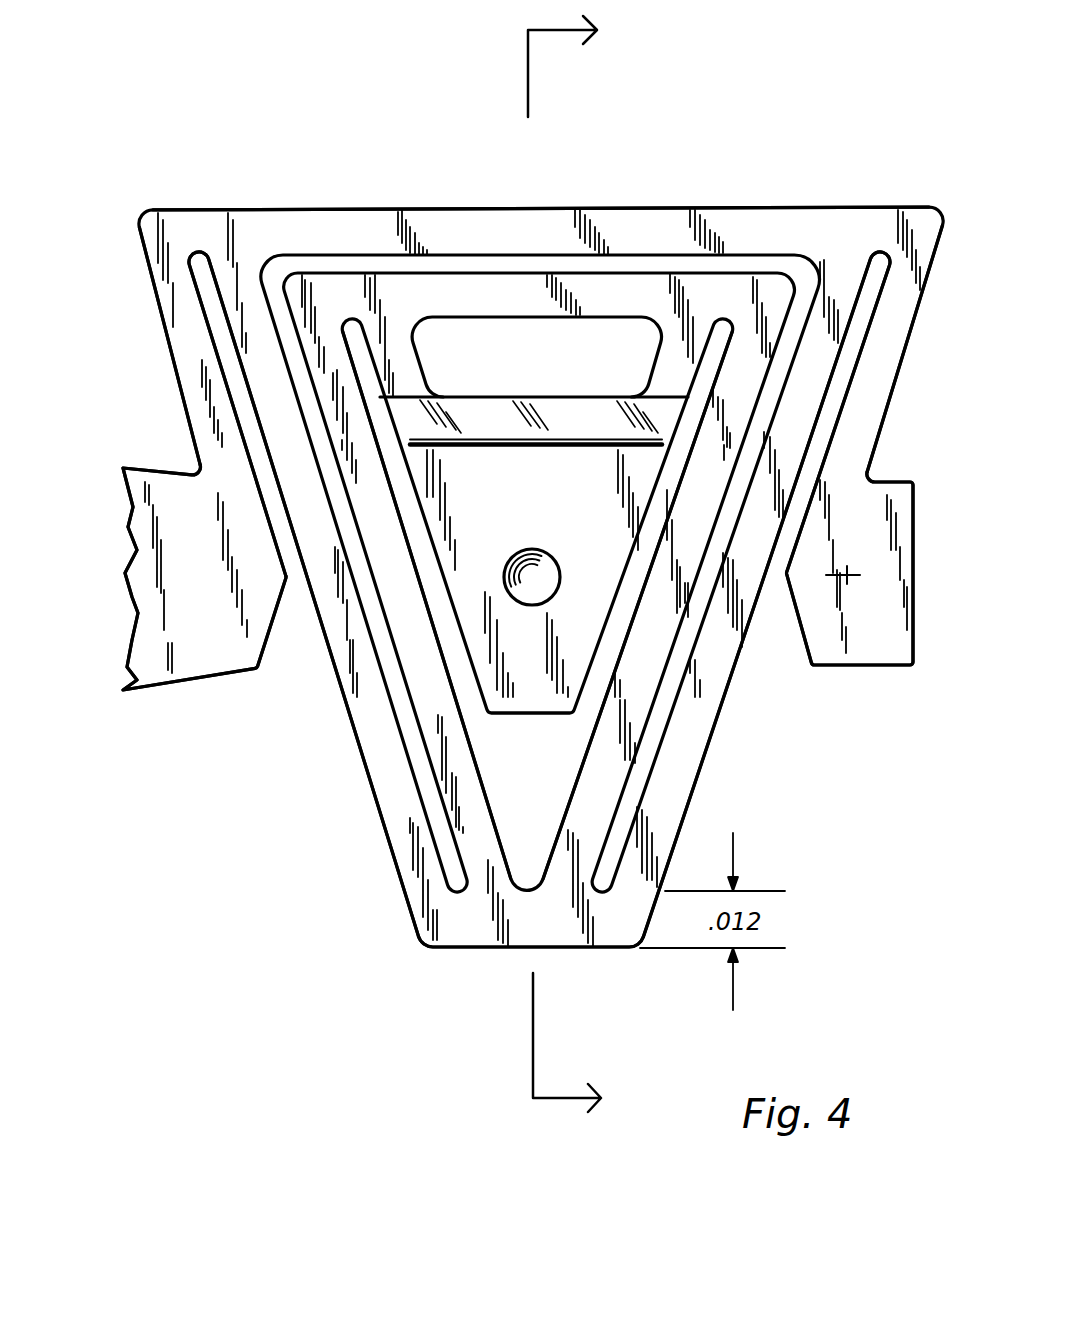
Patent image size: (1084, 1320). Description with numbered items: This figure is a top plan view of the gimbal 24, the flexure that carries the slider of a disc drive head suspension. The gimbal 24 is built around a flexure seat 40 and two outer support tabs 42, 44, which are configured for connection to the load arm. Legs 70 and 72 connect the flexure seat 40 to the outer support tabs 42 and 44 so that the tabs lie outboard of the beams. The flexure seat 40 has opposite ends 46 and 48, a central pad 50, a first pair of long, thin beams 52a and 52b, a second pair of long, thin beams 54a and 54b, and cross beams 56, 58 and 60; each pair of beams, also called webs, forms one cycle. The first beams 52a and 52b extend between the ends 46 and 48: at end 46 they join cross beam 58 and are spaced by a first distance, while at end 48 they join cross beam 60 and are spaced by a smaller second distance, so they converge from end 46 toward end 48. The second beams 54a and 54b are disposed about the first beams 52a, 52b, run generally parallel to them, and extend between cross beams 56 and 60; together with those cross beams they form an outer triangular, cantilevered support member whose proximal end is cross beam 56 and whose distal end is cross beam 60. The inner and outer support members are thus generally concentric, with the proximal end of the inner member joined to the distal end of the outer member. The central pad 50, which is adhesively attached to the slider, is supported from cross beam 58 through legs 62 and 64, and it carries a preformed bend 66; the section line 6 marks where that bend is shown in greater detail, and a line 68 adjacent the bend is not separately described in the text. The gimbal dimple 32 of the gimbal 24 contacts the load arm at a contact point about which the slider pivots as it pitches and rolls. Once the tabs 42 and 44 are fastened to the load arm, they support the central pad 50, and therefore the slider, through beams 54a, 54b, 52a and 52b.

The gimbal 24 is at (537, 577).
The flexure seat 40 is at (410, 193).
The end 46 is at (537, 504).
The cross beam 56 is at (501, 220).
The leg 70 is at (193, 355).
The leg 72 is at (885, 342).
The outer support tab 42 is at (164, 488).
The outer support tab 44 is at (871, 505).
The long, thin beam 54a is at (393, 793).
The long, thin beam 54b is at (680, 757).
The long, thin beam 52a is at (467, 770).
The long, thin beam 52b is at (598, 795).
The central pad 50 is at (505, 490).
The cross beam 58 is at (613, 303).
The leg 62 is at (400, 358).
The leg 64 is at (672, 378).
The preformed bend 66 is at (558, 395).
The flange bend line 68 is at (560, 418).
The gimbal dimple 32 is at (556, 568).
The end 48 is at (531, 982).
The cross beam 60 is at (555, 927).
The section line 6- 6 is at (584, 564).